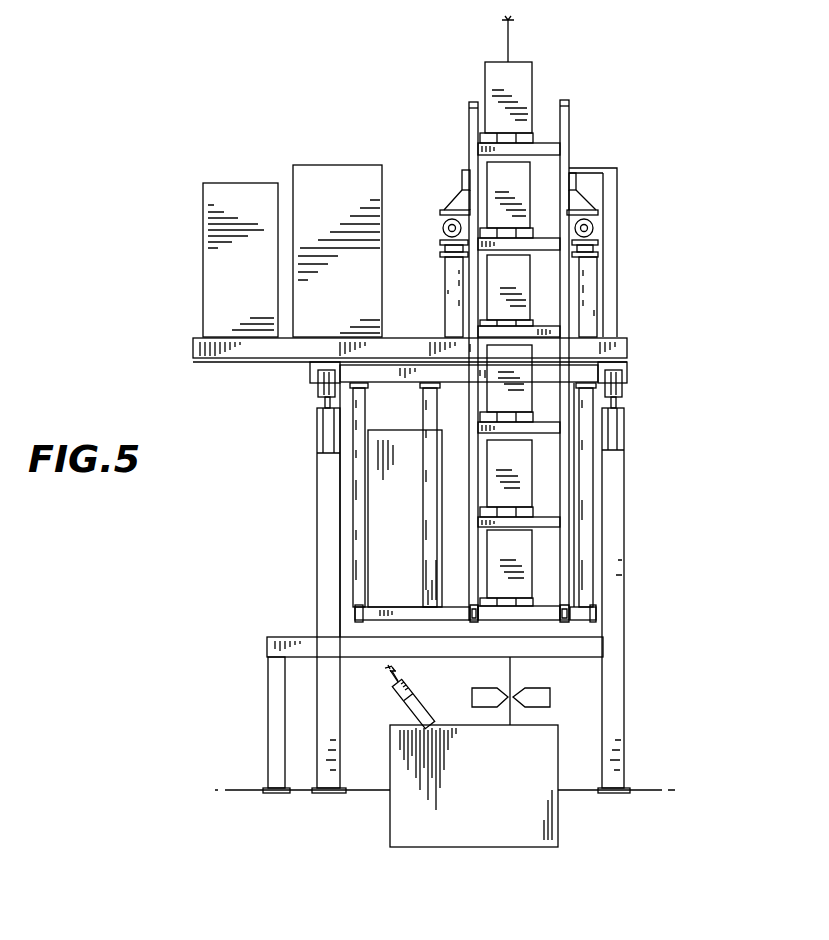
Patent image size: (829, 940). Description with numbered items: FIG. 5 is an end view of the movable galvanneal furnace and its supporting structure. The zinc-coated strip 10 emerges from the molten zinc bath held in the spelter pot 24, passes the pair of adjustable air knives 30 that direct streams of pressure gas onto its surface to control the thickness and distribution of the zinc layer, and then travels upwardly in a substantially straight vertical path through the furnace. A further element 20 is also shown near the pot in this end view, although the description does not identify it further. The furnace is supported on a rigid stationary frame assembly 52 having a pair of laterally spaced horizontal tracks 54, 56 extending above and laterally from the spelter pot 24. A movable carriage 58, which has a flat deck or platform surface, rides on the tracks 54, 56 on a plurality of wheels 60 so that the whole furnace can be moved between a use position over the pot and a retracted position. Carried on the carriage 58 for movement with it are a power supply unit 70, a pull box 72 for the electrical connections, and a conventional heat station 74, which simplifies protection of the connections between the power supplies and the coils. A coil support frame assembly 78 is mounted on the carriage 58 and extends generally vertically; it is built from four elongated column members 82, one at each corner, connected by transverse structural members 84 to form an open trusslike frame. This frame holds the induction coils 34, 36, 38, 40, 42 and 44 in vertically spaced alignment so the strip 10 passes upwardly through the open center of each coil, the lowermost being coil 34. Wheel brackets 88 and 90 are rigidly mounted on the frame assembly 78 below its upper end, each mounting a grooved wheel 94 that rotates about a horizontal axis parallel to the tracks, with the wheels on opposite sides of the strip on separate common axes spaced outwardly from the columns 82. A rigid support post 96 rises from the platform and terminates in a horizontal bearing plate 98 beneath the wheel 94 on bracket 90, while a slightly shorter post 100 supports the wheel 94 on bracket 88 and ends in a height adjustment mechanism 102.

The strip 10 is at (512, 26).
The spray gun 20 is at (402, 712).
The spelter pot 24 is at (556, 752).
The air knives 30 is at (498, 686).
The induction coil 34 is at (520, 560).
The induction coil 36 is at (520, 462).
The induction coil 38 is at (520, 372).
The induction coil 40 is at (520, 280).
The induction coil 42 is at (527, 188).
The induction coil 44 is at (520, 80).
The stationary frame assembly 52 is at (628, 487).
The horizontal track 54 is at (320, 400).
The horizontal track 56 is at (624, 410).
The carriage 58 is at (630, 364).
The wheels 60 is at (316, 382).
The power supply unit 70 is at (402, 519).
The pull box 72 is at (222, 203).
The heat station 74 is at (353, 172).
The coil support frame assembly 78 is at (566, 96).
The column members 82 is at (572, 104).
The transverse structural members 84 is at (552, 150).
The wheel bracket 88 is at (450, 208).
The wheel bracket 90 is at (580, 206).
The grooved wheel 94 is at (447, 228).
The support post 96 is at (595, 320).
The bearing plate 98 is at (592, 258).
The support post 100 is at (445, 312).
The height adjustment mechanism 102 is at (440, 250).